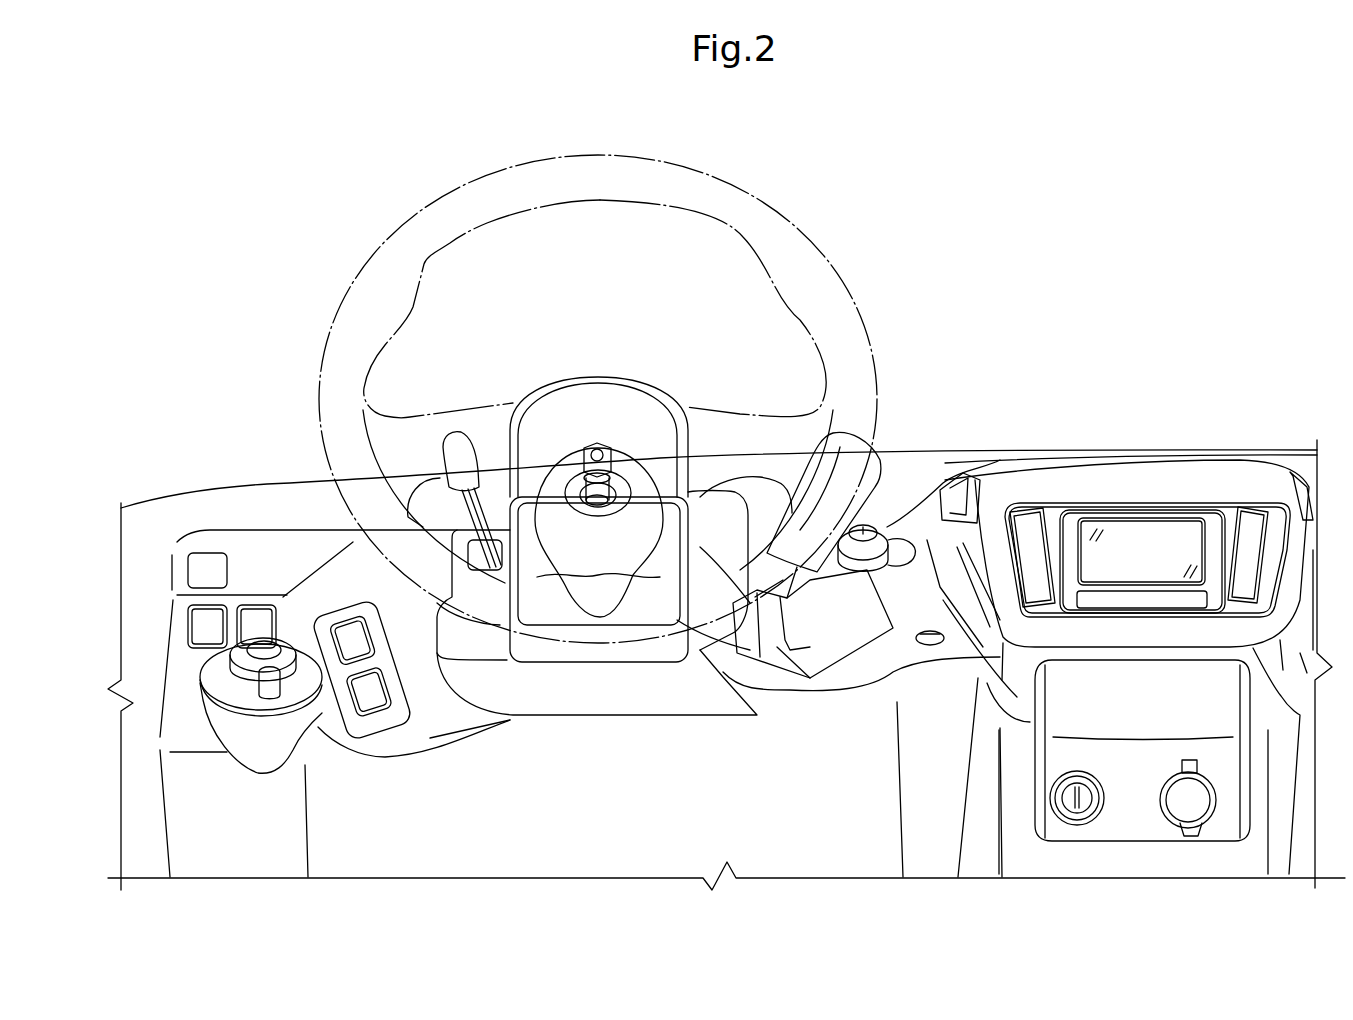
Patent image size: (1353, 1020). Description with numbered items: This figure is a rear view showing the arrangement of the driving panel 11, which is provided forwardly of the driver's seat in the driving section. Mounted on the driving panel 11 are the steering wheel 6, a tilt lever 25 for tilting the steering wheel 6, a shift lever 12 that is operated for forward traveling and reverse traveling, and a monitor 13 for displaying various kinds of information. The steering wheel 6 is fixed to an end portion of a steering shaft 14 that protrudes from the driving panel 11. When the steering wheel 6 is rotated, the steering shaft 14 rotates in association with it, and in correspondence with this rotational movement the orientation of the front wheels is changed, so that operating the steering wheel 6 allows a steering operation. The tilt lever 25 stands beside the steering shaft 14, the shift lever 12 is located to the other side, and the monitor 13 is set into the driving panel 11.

The steering wheel 6 is at (768, 200).
The driving panel 11 is at (1073, 437).
The shift lever 12 is at (843, 457).
The monitor 13 is at (1172, 540).
The steering shaft 14 is at (620, 470).
The tilt lever 25 is at (457, 448).